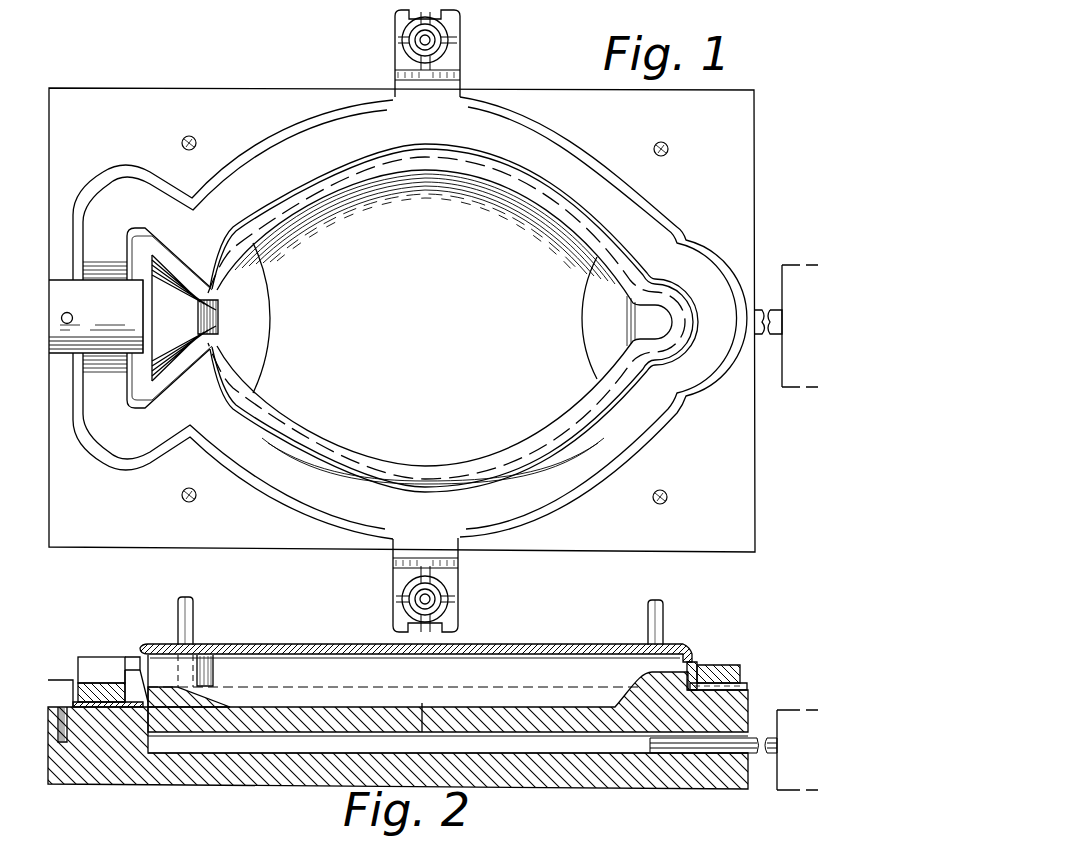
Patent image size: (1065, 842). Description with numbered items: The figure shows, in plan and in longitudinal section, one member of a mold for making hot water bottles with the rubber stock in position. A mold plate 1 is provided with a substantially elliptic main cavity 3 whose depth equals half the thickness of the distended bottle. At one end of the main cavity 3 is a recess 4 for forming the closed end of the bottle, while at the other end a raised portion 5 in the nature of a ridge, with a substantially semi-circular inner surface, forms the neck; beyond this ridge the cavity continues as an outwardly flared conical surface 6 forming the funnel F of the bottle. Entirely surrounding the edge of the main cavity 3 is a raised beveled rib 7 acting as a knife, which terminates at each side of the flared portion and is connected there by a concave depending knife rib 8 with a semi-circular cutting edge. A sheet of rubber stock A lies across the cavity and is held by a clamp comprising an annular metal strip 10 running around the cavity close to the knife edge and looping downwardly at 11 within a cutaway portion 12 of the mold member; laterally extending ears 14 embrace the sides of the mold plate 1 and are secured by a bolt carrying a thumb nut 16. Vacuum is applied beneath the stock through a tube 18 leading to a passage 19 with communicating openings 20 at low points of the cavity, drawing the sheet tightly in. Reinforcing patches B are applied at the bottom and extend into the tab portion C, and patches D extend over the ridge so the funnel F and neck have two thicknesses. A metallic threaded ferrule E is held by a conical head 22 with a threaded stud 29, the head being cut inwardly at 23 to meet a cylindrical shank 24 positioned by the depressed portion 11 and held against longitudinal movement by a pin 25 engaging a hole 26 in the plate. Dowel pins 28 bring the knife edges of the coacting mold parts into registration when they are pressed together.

In FIG. 1, the mold plate 1 is at (402, 320).
In FIG. 2, the main cavity 3 is at (555, 708).
In FIG. 2, the recess 4 is at (690, 660).
In FIG. 2, the raised portion 5 is at (215, 684).
In FIG. 2, the outwardly flared conical surface 6 is at (185, 700).
In FIG. 1, the raised beveled rib 7 is at (432, 478).
In FIG. 2, the raised beveled rib 7 is at (697, 665).
In FIG. 2, the concave depending knife rib 8 is at (162, 698).
In FIG. 1, the annular metal strip 10 is at (410, 318).
In FIG. 2, the annular metal strip 10 is at (741, 674).
In FIG. 2, the downward loop of clamp 11 is at (100, 664).
In FIG. 2, the cutaway portion 12 is at (64, 682).
In FIG. 1, the laterally extending ears 14 is at (460, 60).
In FIG. 1, the thumb nut 16 is at (406, 26).
In FIG. 1, the tube 18 is at (784, 320).
In FIG. 2, the tube 18 is at (746, 735).
In FIG. 2, the passage 19 is at (596, 760).
In FIG. 2, the communicating openings 20 is at (423, 712).
In FIG. 1, the conical head 22 is at (171, 318).
In FIG. 1, the inwardly cut portion 23 is at (136, 300).
In FIG. 1, the cylindrical shank 24 is at (96, 317).
In FIG. 1, the pin 25 is at (81, 320).
In FIG. 2, the hole 26 is at (70, 750).
In FIG. 2, the dowel pins 28 is at (664, 605).
In FIG. 1, the threaded stud 29 is at (219, 330).
In FIG. 1, the rubber stock sheet A is at (442, 340).
In FIG. 2, the rubber stock sheet A is at (588, 648).
In FIG. 1, the reinforcing patches B is at (608, 318).
In FIG. 1, the tab portion C is at (658, 324).
In FIG. 1, the neck reinforcing patches D is at (252, 318).
In FIG. 1, the metallic threaded ferrule E is at (208, 336).
In FIG. 1, the funnel F is at (163, 258).